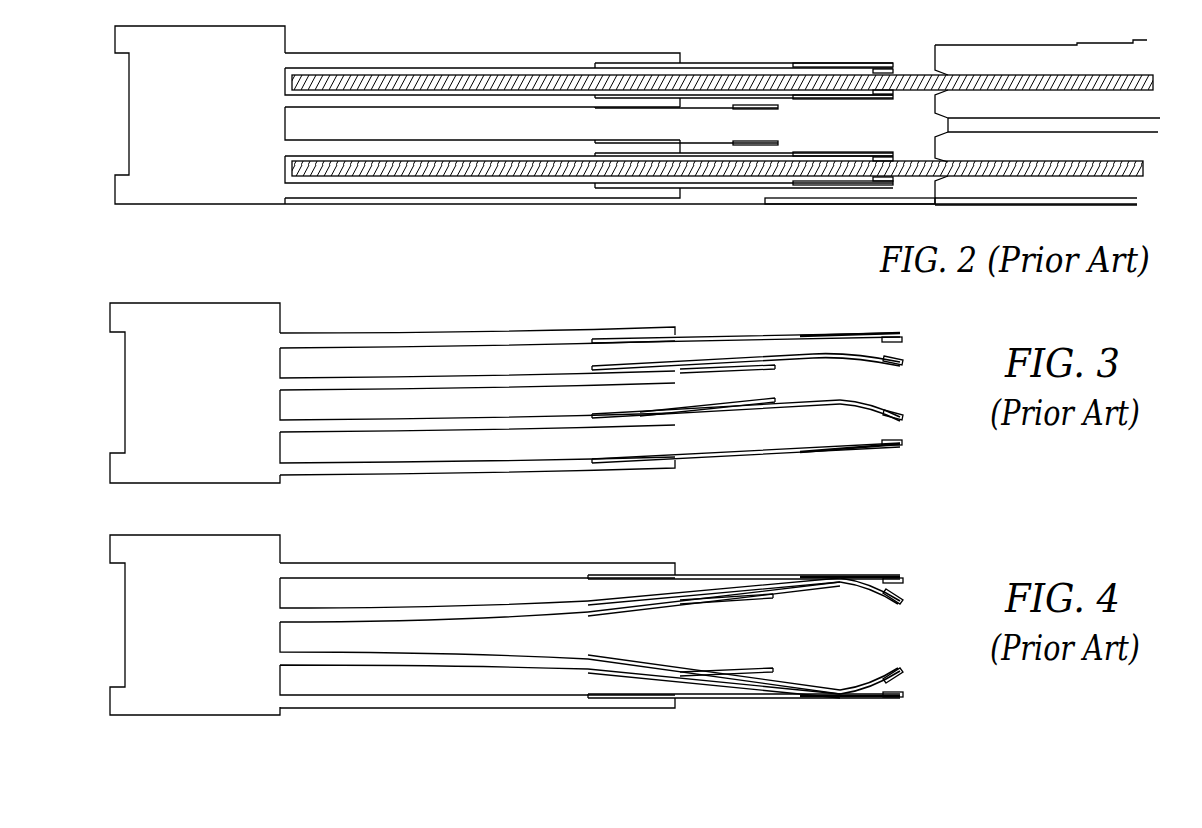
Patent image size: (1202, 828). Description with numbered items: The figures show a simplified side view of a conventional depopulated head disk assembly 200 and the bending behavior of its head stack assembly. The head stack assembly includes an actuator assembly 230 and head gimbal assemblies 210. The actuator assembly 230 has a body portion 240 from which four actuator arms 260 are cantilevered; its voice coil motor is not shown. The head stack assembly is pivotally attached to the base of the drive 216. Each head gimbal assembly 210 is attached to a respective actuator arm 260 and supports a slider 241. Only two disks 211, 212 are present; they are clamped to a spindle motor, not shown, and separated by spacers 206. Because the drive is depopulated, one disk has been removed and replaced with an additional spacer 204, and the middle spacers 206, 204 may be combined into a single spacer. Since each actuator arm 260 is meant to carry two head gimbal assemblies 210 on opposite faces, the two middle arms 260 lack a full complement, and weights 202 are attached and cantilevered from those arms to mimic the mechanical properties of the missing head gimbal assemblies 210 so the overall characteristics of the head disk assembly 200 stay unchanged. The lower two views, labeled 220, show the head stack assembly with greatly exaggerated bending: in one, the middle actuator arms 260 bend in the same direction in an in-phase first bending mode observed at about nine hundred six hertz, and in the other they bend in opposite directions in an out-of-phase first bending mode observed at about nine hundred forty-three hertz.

In FIG. 2, the head disk assembly 200 is at (683, 41).
In FIG. 2, the weights 202 is at (684, 109).
In FIG. 3, the weights 202 is at (688, 403).
In FIG. 4, the weights 202 is at (748, 601).
In FIG. 2, the additional spacer 204 is at (948, 125).
In FIG. 2, the spacers 206 is at (995, 50).
In FIG. 2, the head gimbal assembly 210 is at (806, 62).
In FIG. 3, the head gimbal assembly 210 is at (858, 330).
In FIG. 4, the head gimbal assembly 210 is at (850, 636).
In FIG. 2, the disk 211 is at (300, 75).
In FIG. 2, the disk 212 is at (300, 178).
In FIG. 2, the base of the drive 216 is at (667, 206).
In FIG. 3, the prior art device 220 is at (547, 328).
In FIG. 4, the prior art device 220 is at (540, 560).
In FIG. 2, the actuator assembly 230 is at (532, 52).
In FIG. 2, the body portion 240 is at (132, 180).
In FIG. 3, the body portion 240 is at (133, 470).
In FIG. 4, the body portion 240 is at (238, 538).
In FIG. 2, the slider 241 is at (884, 69).
In FIG. 3, the slider 241 is at (905, 340).
In FIG. 4, the slider 241 is at (905, 582).
In FIG. 2, the actuator arms 260 is at (392, 53).
In FIG. 3, the actuator arms 260 is at (395, 349).
In FIG. 4, the actuator arms 260 is at (385, 579).